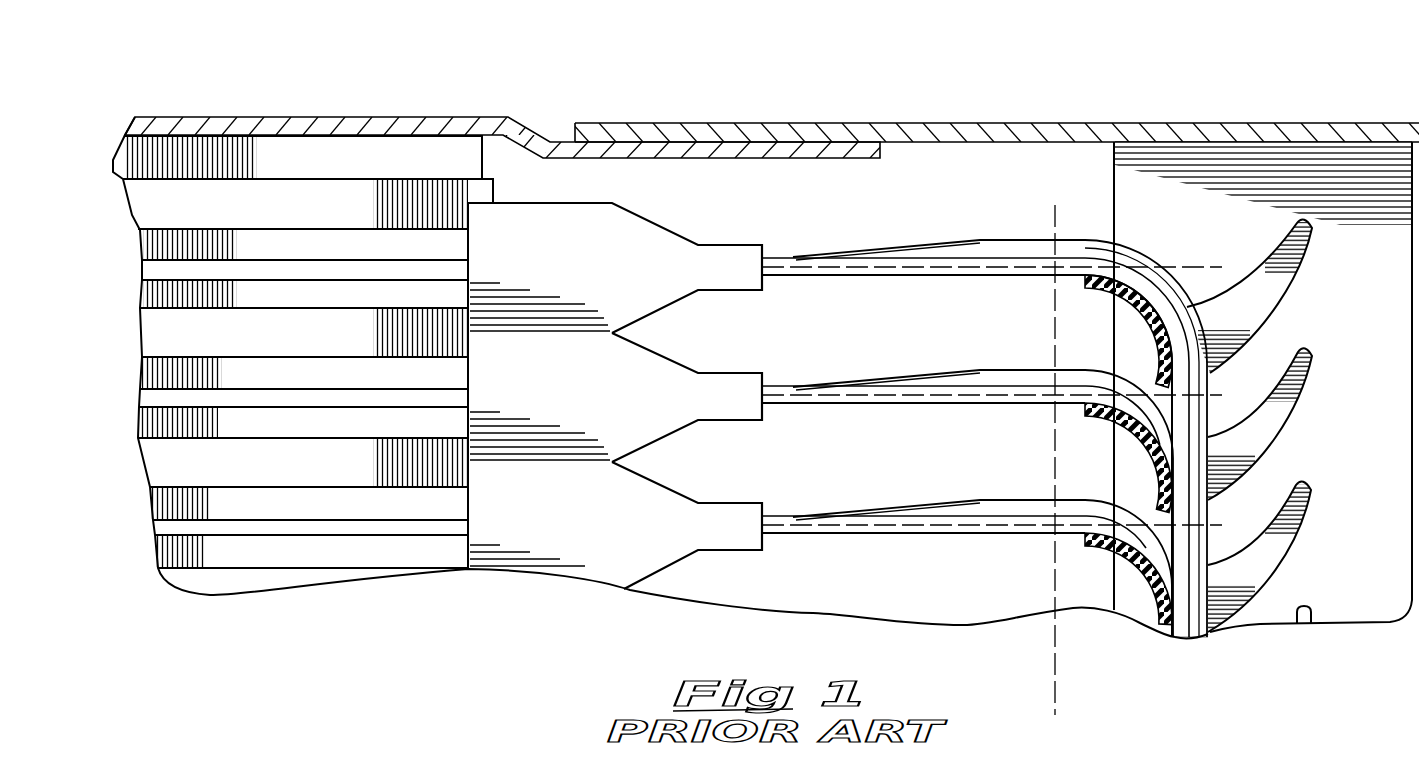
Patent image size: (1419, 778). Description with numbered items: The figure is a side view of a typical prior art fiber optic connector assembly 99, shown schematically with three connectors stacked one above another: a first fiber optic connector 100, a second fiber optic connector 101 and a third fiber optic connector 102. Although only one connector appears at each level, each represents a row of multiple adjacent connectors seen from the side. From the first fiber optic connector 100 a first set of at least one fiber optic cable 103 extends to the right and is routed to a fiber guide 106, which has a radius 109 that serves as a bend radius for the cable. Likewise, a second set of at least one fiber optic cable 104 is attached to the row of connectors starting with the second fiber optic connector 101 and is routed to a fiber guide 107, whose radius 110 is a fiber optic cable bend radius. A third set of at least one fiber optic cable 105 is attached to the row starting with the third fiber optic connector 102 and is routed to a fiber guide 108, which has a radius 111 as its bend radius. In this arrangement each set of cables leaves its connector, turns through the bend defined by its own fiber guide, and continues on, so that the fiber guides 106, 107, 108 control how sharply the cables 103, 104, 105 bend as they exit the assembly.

The fiber optic connector assembly 99 is at (713, 98).
The first fiber optic connector 100 is at (570, 267).
The second fiber optic connector 101 is at (570, 395).
The third fiber optic connector 102 is at (570, 527).
The fiber optic cable 103 is at (867, 267).
The fiber optic cable 104 is at (867, 396).
The fiber optic cable 105 is at (867, 527).
The fiber guide 106 is at (1157, 343).
The fiber guide 107 is at (1173, 452).
The fiber guide 108 is at (1133, 620).
The radius 109 is at (1140, 328).
The radius 110 is at (1140, 457).
The radius 111 is at (1140, 587).